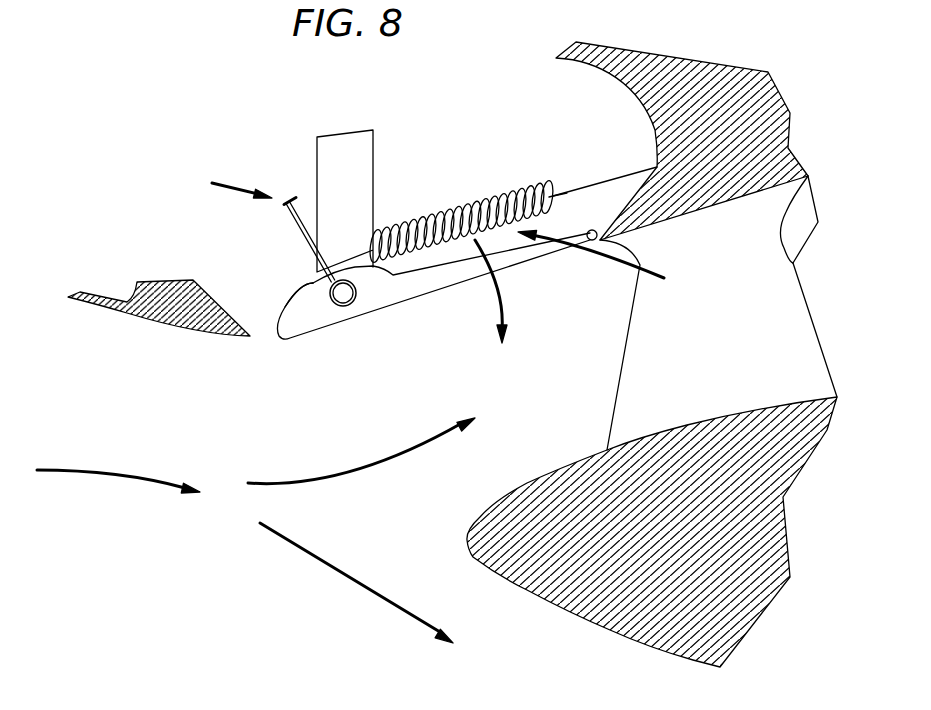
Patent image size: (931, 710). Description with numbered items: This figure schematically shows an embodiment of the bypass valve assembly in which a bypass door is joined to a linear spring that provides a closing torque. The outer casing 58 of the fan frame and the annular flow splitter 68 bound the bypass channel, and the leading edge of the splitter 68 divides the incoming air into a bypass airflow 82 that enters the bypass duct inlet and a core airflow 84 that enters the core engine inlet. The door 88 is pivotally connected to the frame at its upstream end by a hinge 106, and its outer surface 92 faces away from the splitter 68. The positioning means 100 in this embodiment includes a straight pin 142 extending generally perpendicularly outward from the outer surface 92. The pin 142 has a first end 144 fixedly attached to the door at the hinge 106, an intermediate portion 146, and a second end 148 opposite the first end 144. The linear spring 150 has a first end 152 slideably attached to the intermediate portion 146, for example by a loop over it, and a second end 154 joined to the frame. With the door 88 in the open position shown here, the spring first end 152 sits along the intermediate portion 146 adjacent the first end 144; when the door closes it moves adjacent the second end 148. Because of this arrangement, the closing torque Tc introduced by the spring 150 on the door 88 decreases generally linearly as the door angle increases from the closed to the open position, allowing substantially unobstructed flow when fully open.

The outer casing 58 is at (790, 260).
The annular flow splitter 68 is at (690, 425).
The bypass airflow 82 is at (350, 476).
The core airflow 84 is at (297, 550).
The door 88 is at (603, 228).
The outer surface 92 is at (418, 264).
The positioning means 100 is at (606, 262).
The hinge 106 is at (349, 308).
The straight pin 142 is at (227, 186).
The first end 144 is at (310, 288).
The intermediate portion 146 is at (296, 227).
The second end 148 is at (292, 200).
The linear spring 150 is at (425, 222).
The first end 152 is at (352, 250).
The second end 154 is at (567, 192).
The closing torque Tc is at (505, 294).